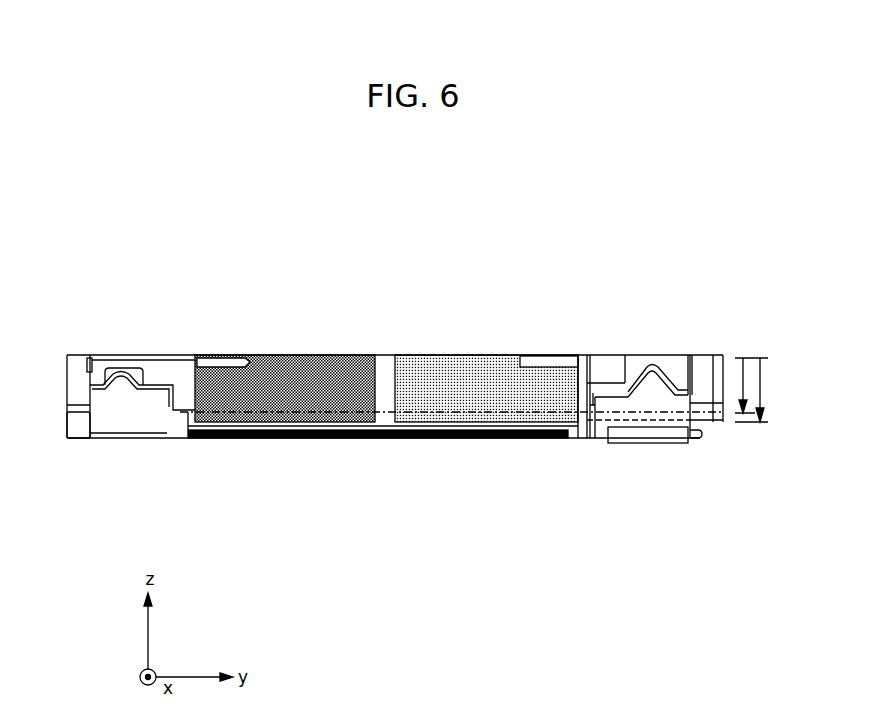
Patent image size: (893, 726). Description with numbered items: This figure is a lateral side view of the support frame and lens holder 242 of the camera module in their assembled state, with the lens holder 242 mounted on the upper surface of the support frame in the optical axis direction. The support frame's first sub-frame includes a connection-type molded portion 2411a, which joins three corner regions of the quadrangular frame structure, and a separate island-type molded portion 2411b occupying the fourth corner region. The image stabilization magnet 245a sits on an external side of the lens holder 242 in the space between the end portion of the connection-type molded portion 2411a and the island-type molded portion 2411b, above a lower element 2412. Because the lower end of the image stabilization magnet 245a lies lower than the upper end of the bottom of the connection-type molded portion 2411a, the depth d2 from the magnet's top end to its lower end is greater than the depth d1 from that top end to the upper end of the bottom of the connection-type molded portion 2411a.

The lens holder 242 is at (68, 373).
The connection-type molded portion 2411a is at (115, 433).
The island-type molded portion 2411b is at (637, 427).
The image stabilization magnet 245a is at (300, 412).
The base plate 2412 is at (423, 437).
The depth to the upper end of the bottom of the connection-type molded portion d1 is at (736, 363).
The depth to the lower end of the image stabilization magnet d2 is at (771, 358).